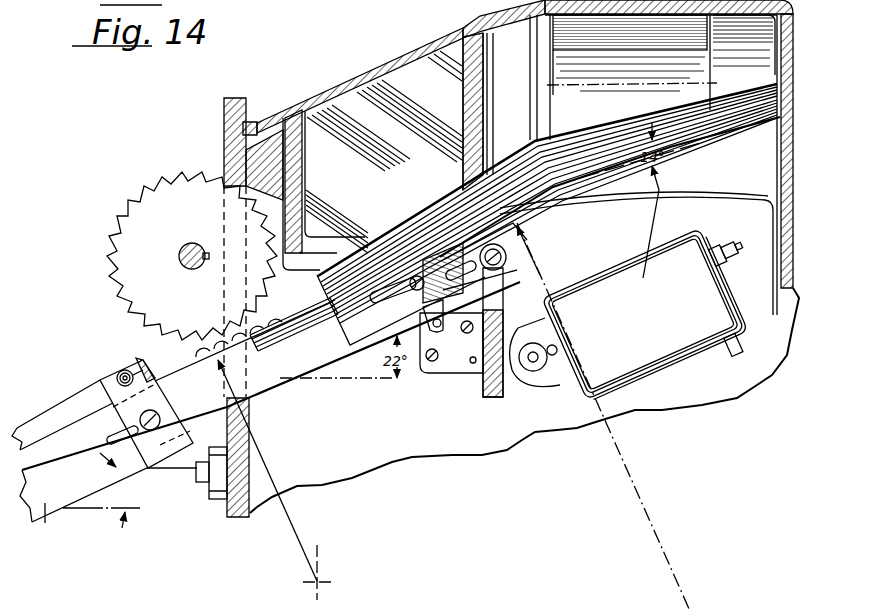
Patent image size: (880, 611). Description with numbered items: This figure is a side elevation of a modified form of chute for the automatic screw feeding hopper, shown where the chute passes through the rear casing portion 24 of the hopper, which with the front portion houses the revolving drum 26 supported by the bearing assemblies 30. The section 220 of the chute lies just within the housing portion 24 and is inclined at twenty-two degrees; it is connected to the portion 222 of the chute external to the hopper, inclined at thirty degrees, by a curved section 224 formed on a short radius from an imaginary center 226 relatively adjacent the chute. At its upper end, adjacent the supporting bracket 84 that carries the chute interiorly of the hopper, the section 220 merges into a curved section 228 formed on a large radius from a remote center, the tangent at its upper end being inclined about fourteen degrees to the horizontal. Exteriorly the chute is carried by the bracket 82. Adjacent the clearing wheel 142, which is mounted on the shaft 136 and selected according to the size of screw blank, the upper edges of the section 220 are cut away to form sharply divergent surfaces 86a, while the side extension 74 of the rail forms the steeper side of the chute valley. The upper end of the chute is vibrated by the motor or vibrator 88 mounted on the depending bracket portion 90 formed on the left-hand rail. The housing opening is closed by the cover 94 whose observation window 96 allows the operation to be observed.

The rear casing portion 24 is at (222, 128).
The cover 94 is at (284, 123).
The observation window 96 is at (353, 88).
The revolving drum 26 is at (697, 88).
The side extension 74 is at (559, 146).
The shaft 136 is at (192, 243).
The clearing wheel 142 is at (118, 282).
The curved section 224 is at (203, 362).
The chute section external to hopper 222 is at (43, 413).
The bearing assemblies 30 is at (108, 490).
The bracket 82 is at (177, 463).
The sharply divergent surfaces 86a is at (290, 326).
The chute section within housing 220 is at (337, 360).
The bracket 84 is at (512, 258).
The curved section 228 is at (661, 317).
The motor or vibrator 88 is at (665, 366).
The depending bracket portion 90 is at (570, 378).
The imaginary center 226 is at (320, 579).